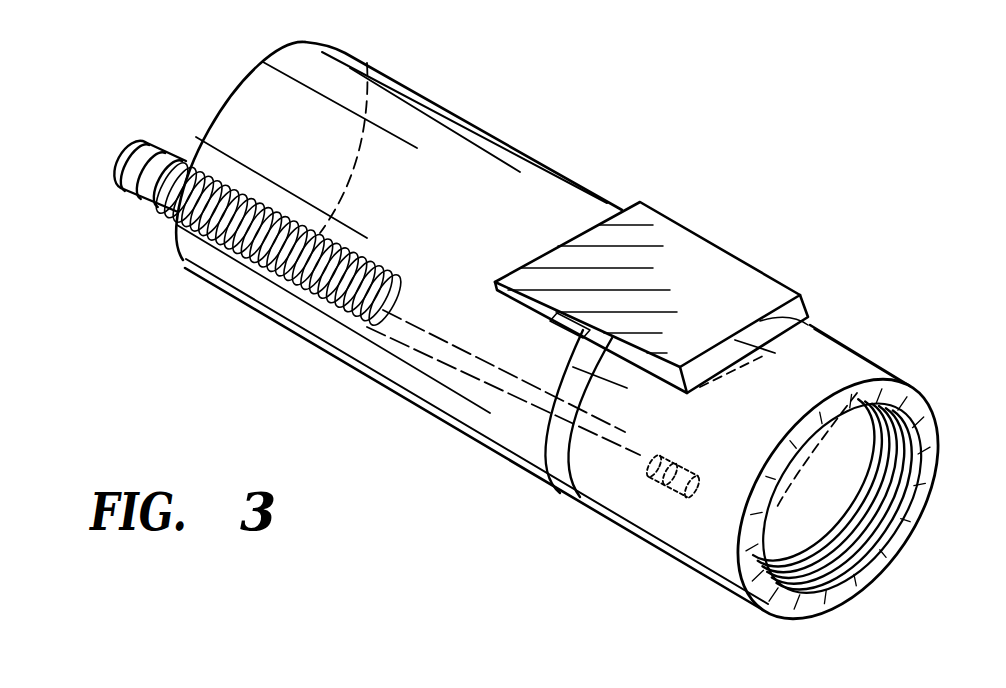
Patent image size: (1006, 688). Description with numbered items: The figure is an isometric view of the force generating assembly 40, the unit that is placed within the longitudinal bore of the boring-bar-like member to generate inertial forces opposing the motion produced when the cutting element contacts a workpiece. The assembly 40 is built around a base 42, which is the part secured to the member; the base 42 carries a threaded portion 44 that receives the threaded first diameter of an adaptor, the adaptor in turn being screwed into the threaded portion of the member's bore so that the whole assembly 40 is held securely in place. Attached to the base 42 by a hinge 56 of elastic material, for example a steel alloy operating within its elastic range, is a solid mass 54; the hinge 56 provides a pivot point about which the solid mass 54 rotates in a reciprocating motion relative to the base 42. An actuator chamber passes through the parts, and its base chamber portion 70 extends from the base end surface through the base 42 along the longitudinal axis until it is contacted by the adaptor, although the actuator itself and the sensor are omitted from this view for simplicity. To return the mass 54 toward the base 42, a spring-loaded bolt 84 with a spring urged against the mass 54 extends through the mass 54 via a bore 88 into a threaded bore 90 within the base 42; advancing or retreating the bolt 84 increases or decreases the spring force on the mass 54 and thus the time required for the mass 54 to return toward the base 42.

The force generating assembly 40 is at (523, 153).
The base 42 is at (813, 360).
The threaded portion 44 is at (866, 553).
The solid mass 54 is at (435, 137).
The hinge 56 is at (735, 272).
The base chamber portion 70 is at (858, 398).
The spring-loaded bolt 84 is at (128, 150).
The bore 88 is at (507, 393).
The threaded bore 90 is at (655, 482).